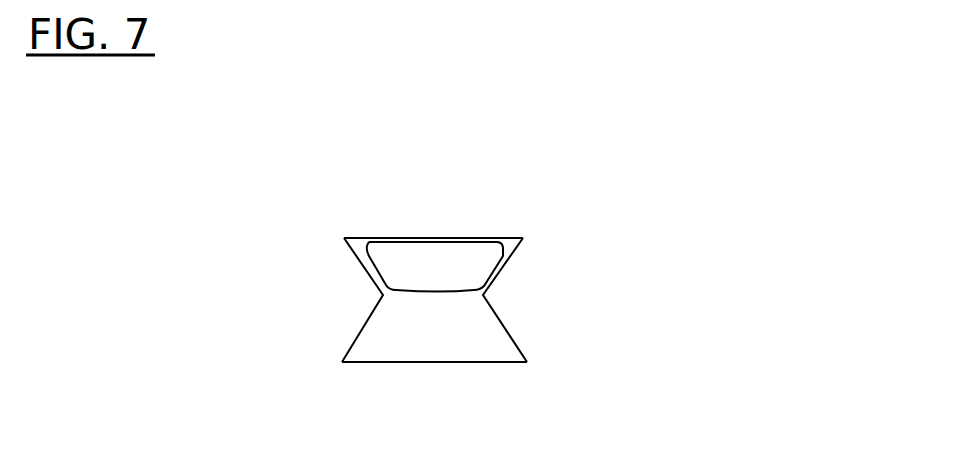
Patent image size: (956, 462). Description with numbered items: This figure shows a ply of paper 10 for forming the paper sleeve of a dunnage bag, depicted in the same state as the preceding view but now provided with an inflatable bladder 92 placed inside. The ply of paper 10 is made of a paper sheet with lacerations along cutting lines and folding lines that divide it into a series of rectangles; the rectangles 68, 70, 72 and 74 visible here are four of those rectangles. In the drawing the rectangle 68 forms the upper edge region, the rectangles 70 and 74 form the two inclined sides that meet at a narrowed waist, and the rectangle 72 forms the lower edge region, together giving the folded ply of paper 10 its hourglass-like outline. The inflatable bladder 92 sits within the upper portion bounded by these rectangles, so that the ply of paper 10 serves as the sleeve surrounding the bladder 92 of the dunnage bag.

The ply of paper 10 is at (882, 115).
The rectangle 68 is at (448, 238).
The rectangle 70 is at (362, 326).
The rectangle 72 is at (400, 363).
The rectangle 74 is at (502, 318).
The inflatable bladder 92 is at (465, 255).